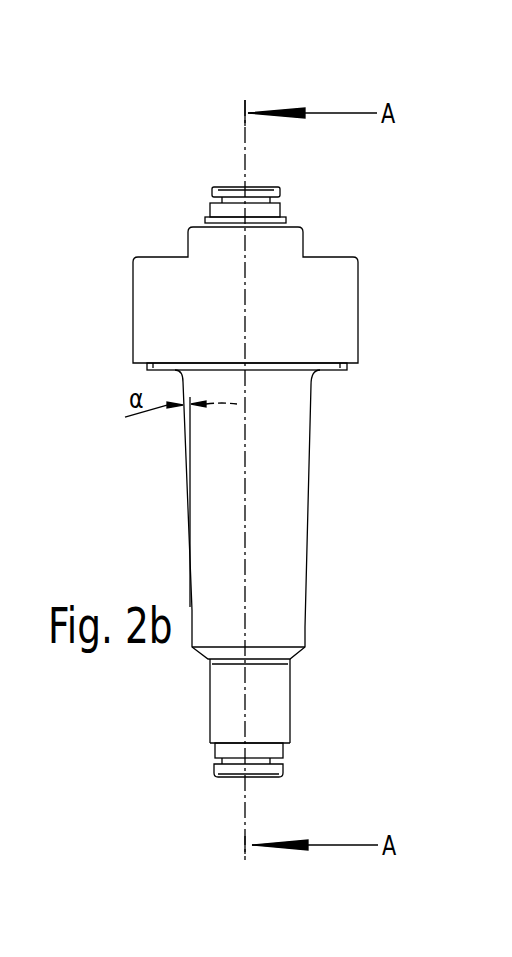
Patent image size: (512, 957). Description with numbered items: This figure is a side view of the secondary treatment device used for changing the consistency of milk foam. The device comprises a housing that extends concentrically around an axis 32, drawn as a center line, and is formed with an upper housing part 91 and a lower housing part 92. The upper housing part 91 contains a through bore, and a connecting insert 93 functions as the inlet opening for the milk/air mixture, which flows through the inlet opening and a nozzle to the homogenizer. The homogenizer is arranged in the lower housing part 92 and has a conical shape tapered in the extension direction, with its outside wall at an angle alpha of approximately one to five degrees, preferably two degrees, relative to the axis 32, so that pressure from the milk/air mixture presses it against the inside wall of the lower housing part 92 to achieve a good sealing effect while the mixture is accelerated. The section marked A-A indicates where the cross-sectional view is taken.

The axis 32 is at (245, 805).
The upper housing part 91 is at (343, 303).
The lower housing part 92 is at (282, 587).
The connecting insert 93 is at (265, 195).